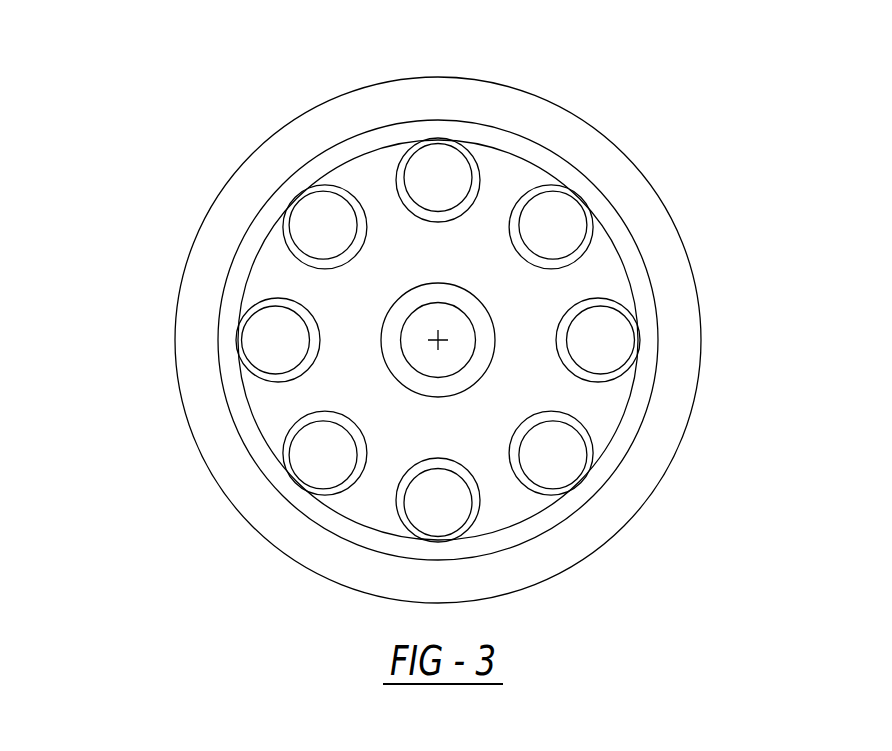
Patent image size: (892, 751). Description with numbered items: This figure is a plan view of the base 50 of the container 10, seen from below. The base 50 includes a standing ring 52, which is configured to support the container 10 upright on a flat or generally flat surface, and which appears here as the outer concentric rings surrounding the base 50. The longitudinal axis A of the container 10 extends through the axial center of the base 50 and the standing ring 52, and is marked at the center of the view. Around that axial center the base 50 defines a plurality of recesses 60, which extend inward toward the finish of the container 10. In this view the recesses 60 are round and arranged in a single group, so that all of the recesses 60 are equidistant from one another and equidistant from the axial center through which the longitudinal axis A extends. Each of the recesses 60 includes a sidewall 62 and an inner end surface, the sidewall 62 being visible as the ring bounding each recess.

The container 10 is at (128, 256).
The base 50 is at (240, 237).
The standing ring 52 is at (625, 263).
The recesses 60 is at (340, 207).
The sidewall 62 is at (557, 334).
The longitudinal axis A is at (438, 340).